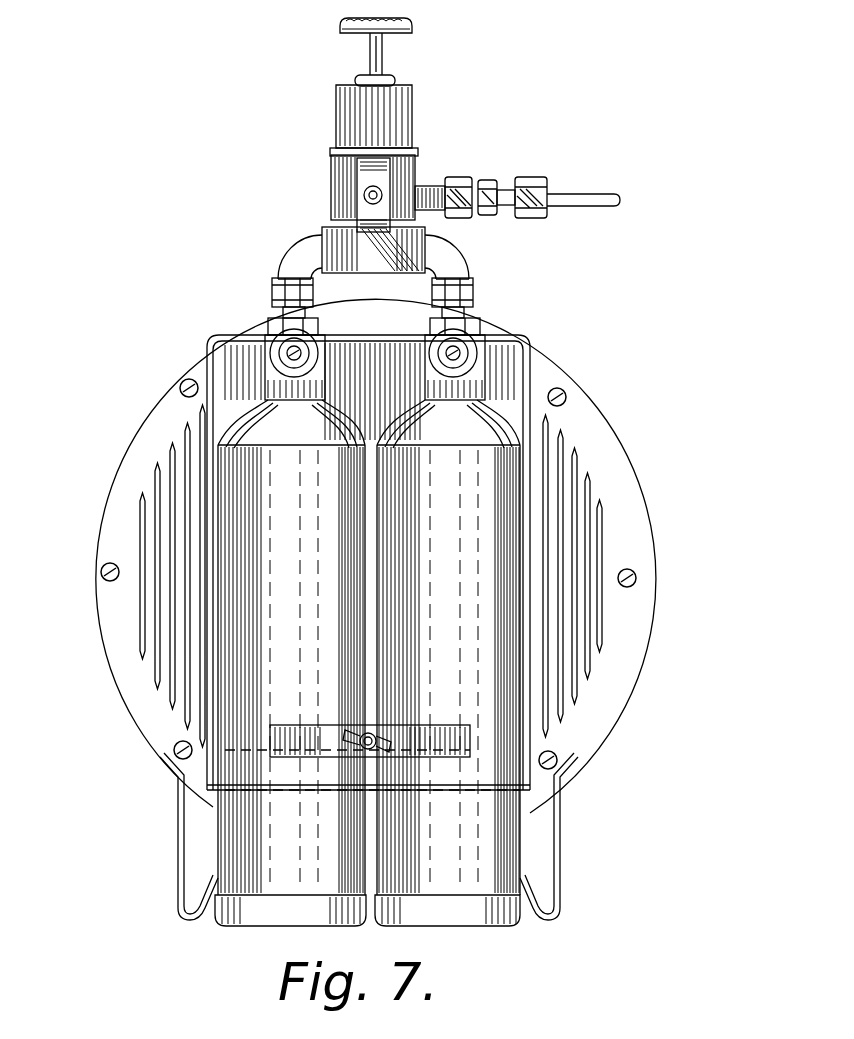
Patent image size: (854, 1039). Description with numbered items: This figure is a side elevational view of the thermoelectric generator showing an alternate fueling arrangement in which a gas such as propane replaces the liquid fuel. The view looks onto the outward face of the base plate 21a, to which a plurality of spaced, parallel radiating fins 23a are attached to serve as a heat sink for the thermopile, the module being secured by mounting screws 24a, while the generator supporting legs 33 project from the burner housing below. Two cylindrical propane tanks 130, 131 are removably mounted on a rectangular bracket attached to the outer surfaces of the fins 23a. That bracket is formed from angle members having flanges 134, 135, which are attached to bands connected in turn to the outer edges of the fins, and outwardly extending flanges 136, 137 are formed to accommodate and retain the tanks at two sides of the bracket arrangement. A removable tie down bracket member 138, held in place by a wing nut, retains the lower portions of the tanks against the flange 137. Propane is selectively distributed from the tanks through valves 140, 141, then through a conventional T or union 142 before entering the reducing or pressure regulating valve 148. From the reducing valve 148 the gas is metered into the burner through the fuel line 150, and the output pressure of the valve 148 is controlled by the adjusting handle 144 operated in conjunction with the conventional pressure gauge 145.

The base plate 21a is at (612, 440).
The radiating fins 23a is at (590, 490).
The mounting screws 24a is at (637, 580).
The generator supporting legs 33 is at (183, 904).
The cylindrical propane tank 130 is at (215, 846).
The cylindrical propane tank 131 is at (522, 866).
The flange 134 is at (558, 795).
The flange 135 is at (207, 760).
The outwardly extending flange 136 is at (247, 345).
The outwardly extending flange 137 is at (190, 736).
The tie down bracket member 138 is at (440, 722).
The valve 140 is at (268, 350).
The valve 141 is at (487, 340).
The T or union 142 is at (322, 240).
The adjusting handle 144 is at (412, 25).
The pressure gauge 145 is at (357, 180).
The reducing or pressure regulating valve 148 is at (415, 162).
The fuel line 150 is at (598, 192).